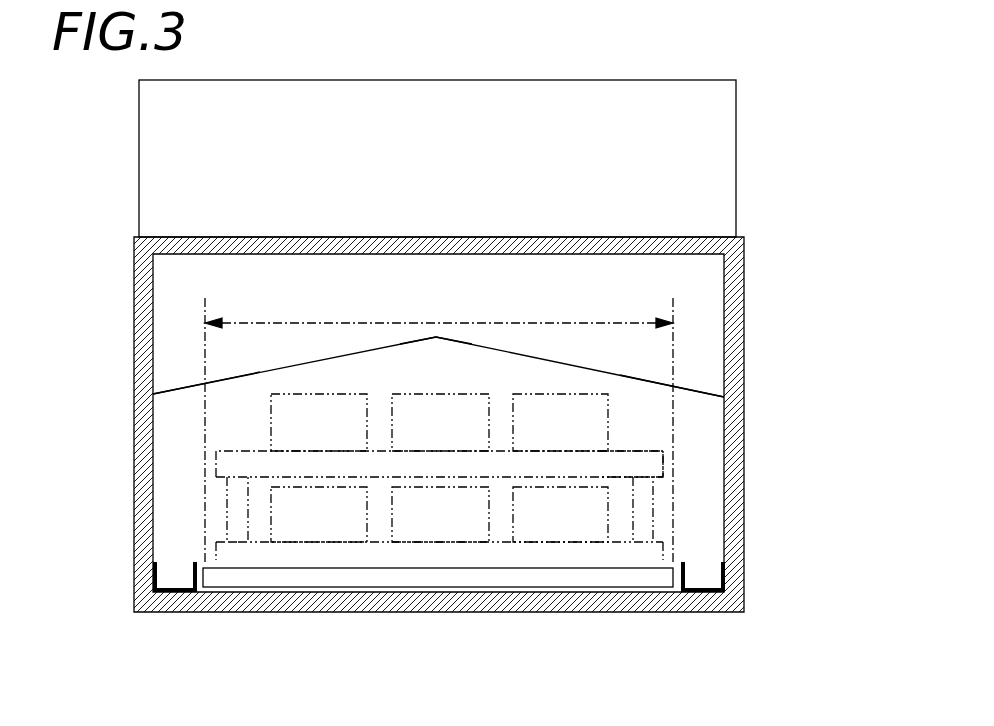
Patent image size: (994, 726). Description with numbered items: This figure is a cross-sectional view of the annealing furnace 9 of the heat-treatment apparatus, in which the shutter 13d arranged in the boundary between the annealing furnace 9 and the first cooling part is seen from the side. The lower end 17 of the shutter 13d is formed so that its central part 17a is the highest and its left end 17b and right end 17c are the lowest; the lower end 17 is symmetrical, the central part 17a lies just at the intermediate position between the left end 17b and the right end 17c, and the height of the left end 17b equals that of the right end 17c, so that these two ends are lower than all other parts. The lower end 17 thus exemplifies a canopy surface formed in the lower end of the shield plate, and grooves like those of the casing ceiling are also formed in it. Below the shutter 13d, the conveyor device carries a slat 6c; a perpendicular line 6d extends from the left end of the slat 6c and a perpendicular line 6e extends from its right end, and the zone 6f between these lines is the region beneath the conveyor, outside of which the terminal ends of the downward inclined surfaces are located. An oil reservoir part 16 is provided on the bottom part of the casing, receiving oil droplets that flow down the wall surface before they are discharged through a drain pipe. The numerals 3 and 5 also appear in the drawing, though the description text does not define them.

The battery module 3 is at (300, 437).
The support frame 5 is at (372, 467).
The slat 6c is at (598, 578).
The perpendicular line 6d is at (205, 473).
The perpendicular line 6e is at (675, 479).
The zone 6f is at (439, 423).
The annealing furnace 9 is at (145, 280).
The shutter 13d is at (173, 112).
The oil reservoir part 16 is at (165, 590).
The lower end 17 is at (362, 353).
The central part 17a is at (437, 340).
The left end 17b is at (153, 398).
The right end 17c is at (683, 389).